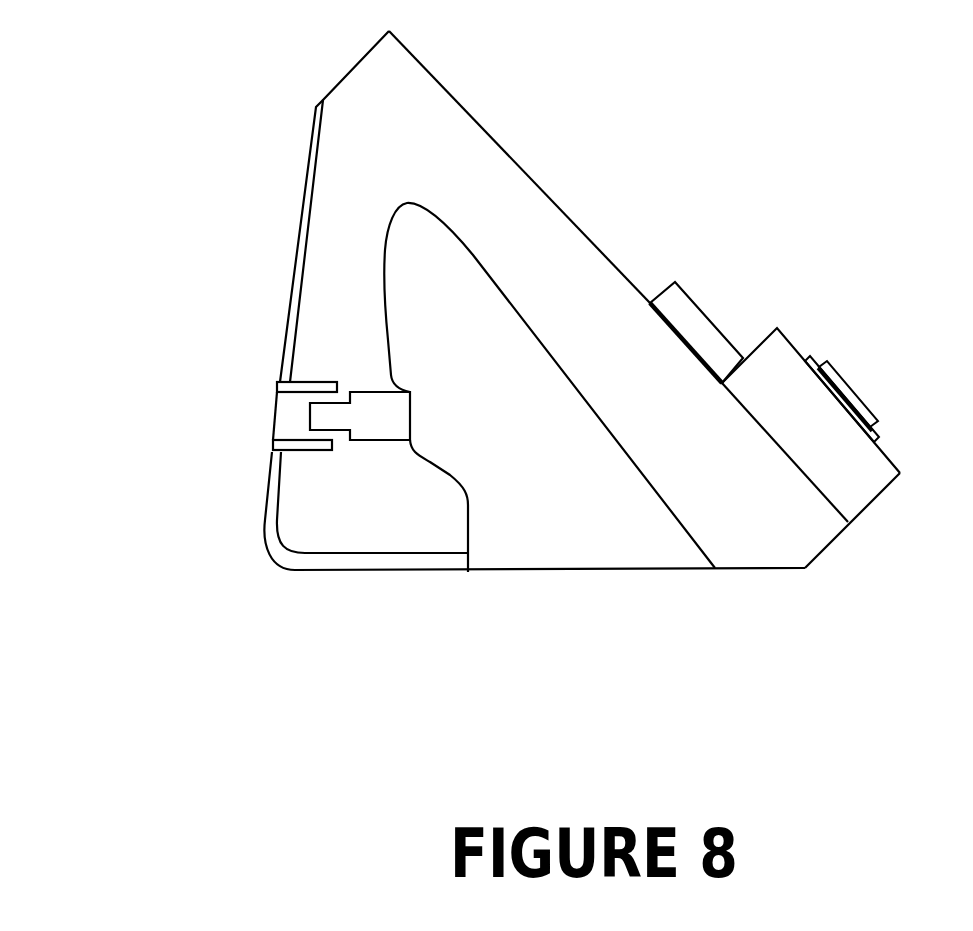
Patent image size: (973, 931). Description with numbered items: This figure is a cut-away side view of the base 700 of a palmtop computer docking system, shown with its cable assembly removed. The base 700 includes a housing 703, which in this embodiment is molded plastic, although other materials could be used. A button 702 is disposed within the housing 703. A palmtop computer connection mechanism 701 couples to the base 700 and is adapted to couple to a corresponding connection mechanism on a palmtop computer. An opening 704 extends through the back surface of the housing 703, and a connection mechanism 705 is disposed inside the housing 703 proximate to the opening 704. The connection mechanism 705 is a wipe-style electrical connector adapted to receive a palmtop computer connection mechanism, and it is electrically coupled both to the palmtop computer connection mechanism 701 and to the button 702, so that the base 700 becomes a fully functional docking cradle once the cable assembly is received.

The base 700 is at (148, 123).
The palmtop computer connection mechanism 701 is at (716, 299).
The button 702 is at (890, 385).
The housing 703 is at (600, 556).
The opening 704 is at (256, 415).
The connection mechanism 705 is at (402, 424).